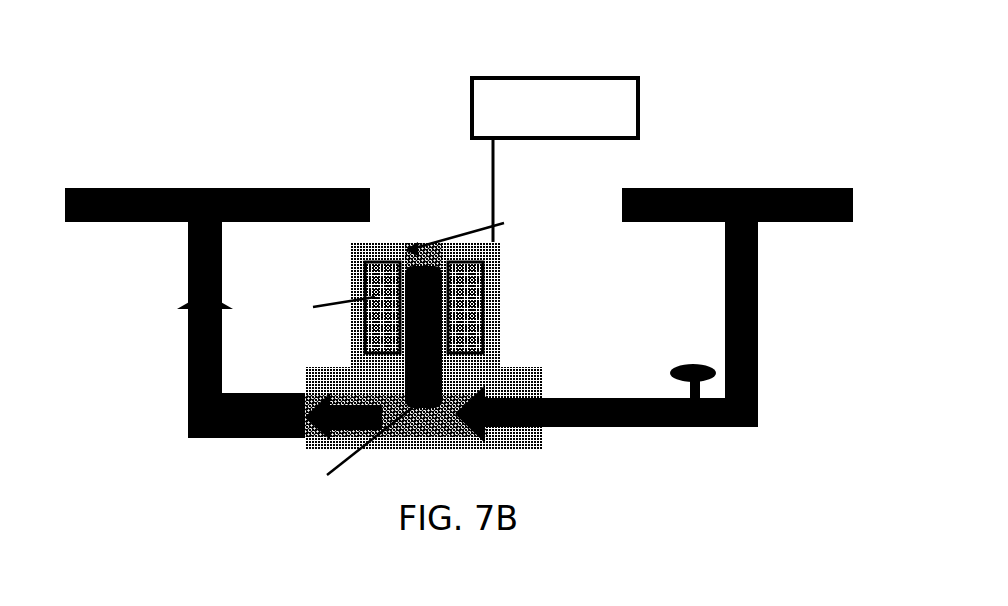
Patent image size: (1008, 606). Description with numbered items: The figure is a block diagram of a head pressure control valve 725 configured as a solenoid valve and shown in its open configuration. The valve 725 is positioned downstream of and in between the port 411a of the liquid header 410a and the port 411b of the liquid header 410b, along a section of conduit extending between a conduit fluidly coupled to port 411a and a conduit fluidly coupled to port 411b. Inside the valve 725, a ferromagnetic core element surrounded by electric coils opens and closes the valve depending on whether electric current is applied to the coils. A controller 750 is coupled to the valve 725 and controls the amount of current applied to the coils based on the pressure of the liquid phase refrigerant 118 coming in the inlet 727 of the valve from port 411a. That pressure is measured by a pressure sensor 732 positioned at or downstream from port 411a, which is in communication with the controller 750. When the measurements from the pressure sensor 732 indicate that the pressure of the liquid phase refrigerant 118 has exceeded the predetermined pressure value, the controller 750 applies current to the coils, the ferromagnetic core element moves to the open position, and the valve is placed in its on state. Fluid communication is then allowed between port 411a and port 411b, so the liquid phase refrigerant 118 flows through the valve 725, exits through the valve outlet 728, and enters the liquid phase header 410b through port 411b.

The controller 750 is at (548, 103).
The head pressure control valve 725 is at (393, 212).
The liquid header 410b is at (217, 186).
The liquid header 410a is at (737, 186).
The port 411b is at (185, 225).
The port 411a is at (760, 225).
The pressure sensor 732 is at (695, 363).
The liquid phase refrigerant 118 is at (580, 398).
The valve outlet 728 is at (315, 403).
The inlet 727 is at (542, 428).